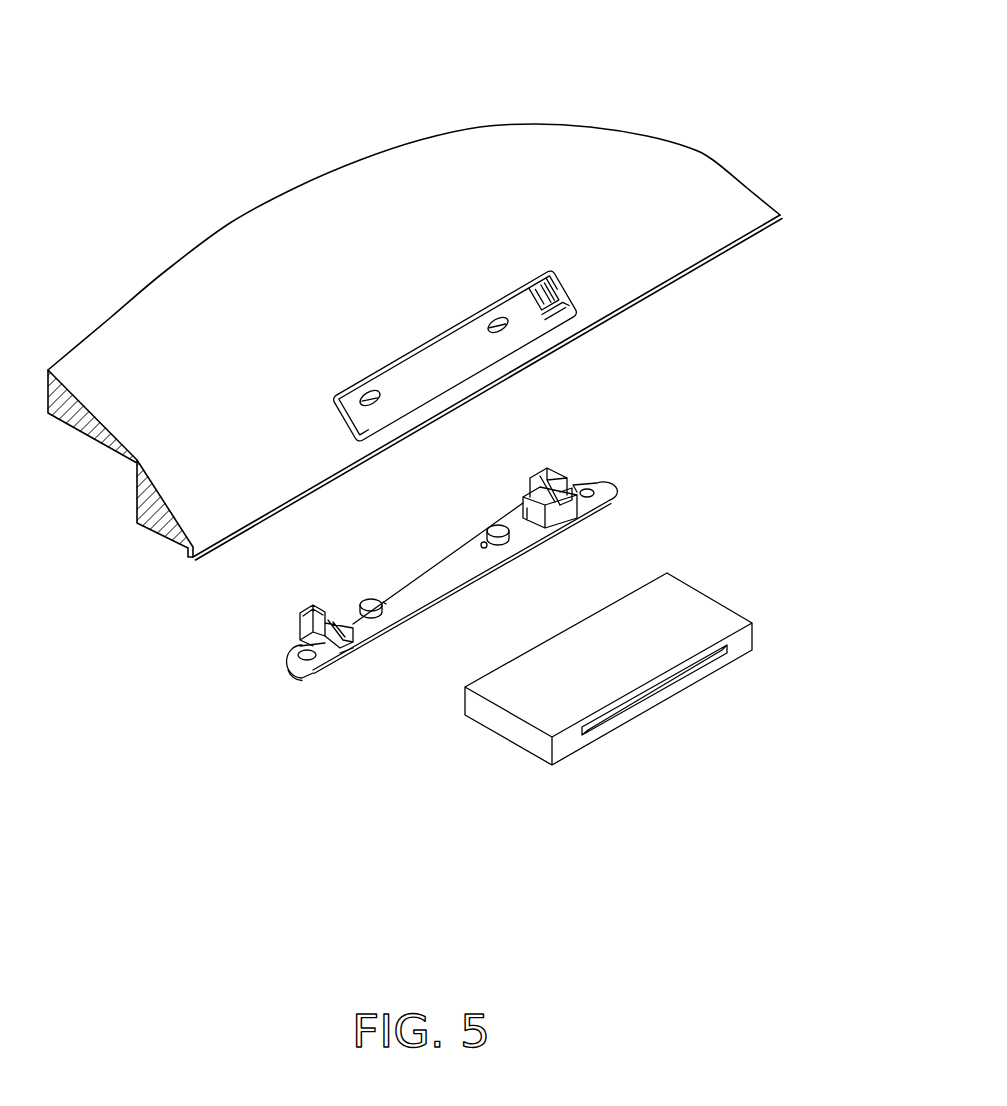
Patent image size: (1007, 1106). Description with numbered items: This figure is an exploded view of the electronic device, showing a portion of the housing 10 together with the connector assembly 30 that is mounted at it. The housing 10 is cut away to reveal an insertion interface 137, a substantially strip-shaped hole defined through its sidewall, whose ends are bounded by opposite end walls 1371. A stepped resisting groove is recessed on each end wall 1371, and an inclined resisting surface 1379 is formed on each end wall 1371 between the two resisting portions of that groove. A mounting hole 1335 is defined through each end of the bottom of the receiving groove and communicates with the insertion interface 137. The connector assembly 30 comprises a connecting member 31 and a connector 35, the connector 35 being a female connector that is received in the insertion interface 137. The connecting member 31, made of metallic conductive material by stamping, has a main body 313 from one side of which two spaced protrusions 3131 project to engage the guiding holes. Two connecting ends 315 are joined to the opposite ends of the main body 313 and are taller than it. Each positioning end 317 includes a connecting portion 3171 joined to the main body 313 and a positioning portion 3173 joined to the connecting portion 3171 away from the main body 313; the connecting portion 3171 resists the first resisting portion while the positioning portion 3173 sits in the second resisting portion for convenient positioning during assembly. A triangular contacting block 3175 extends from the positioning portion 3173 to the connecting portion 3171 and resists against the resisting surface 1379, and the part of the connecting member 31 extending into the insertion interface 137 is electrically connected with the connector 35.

The housing 10 is at (150, 328).
The insertion interface 137 is at (522, 330).
The mounting hole 1335 is at (575, 306).
The end wall 1371 is at (577, 262).
The resisting surface 1379 is at (563, 262).
The connector assembly 30 is at (726, 483).
The connecting member 31 is at (452, 546).
The main body 313 is at (423, 582).
The protrusion 3131 is at (492, 526).
The connecting end 315 is at (287, 663).
The positioning end 317 is at (333, 617).
The connecting portion 3171 is at (537, 510).
The positioning portion 3173 is at (543, 467).
The contacting block 3175 is at (568, 490).
The connector 35 is at (642, 608).